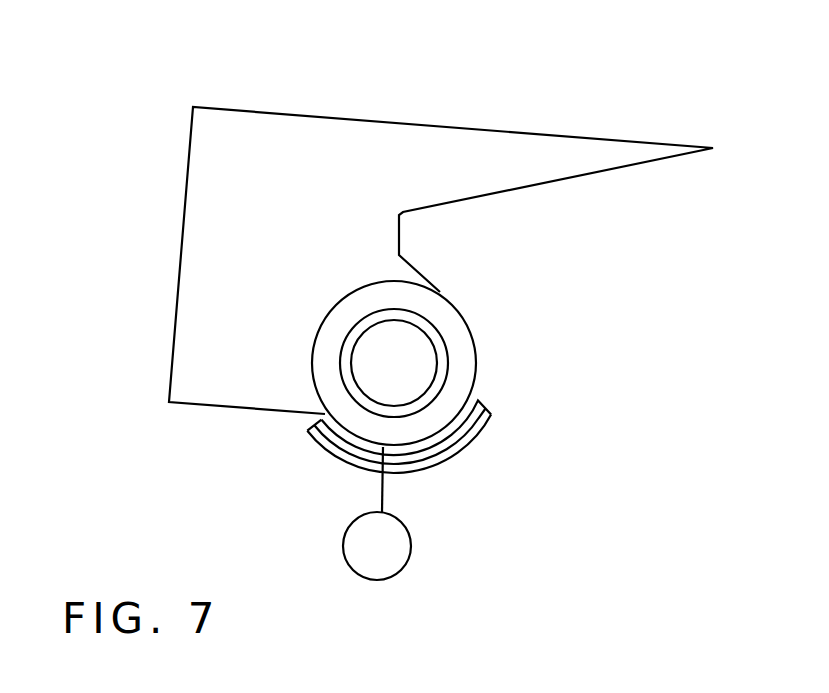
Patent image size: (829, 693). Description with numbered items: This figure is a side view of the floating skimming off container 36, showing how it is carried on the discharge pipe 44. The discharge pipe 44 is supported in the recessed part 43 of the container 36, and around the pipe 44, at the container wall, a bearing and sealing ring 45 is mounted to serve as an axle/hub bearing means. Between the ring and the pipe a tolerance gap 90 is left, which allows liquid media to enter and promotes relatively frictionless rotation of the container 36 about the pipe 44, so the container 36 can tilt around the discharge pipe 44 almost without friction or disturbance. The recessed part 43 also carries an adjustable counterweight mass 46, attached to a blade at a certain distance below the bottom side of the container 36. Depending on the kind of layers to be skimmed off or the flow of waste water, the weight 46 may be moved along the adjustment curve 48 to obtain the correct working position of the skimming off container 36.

The skimming off container 36 is at (590, 105).
The recessed part 43 is at (328, 367).
The discharge pipe 44 is at (397, 386).
The bearing and sealing ring 45 is at (438, 310).
The adjustable weight mass 46 is at (392, 552).
The adjustment curve 48 is at (327, 443).
The tolerance gap 90 is at (442, 338).